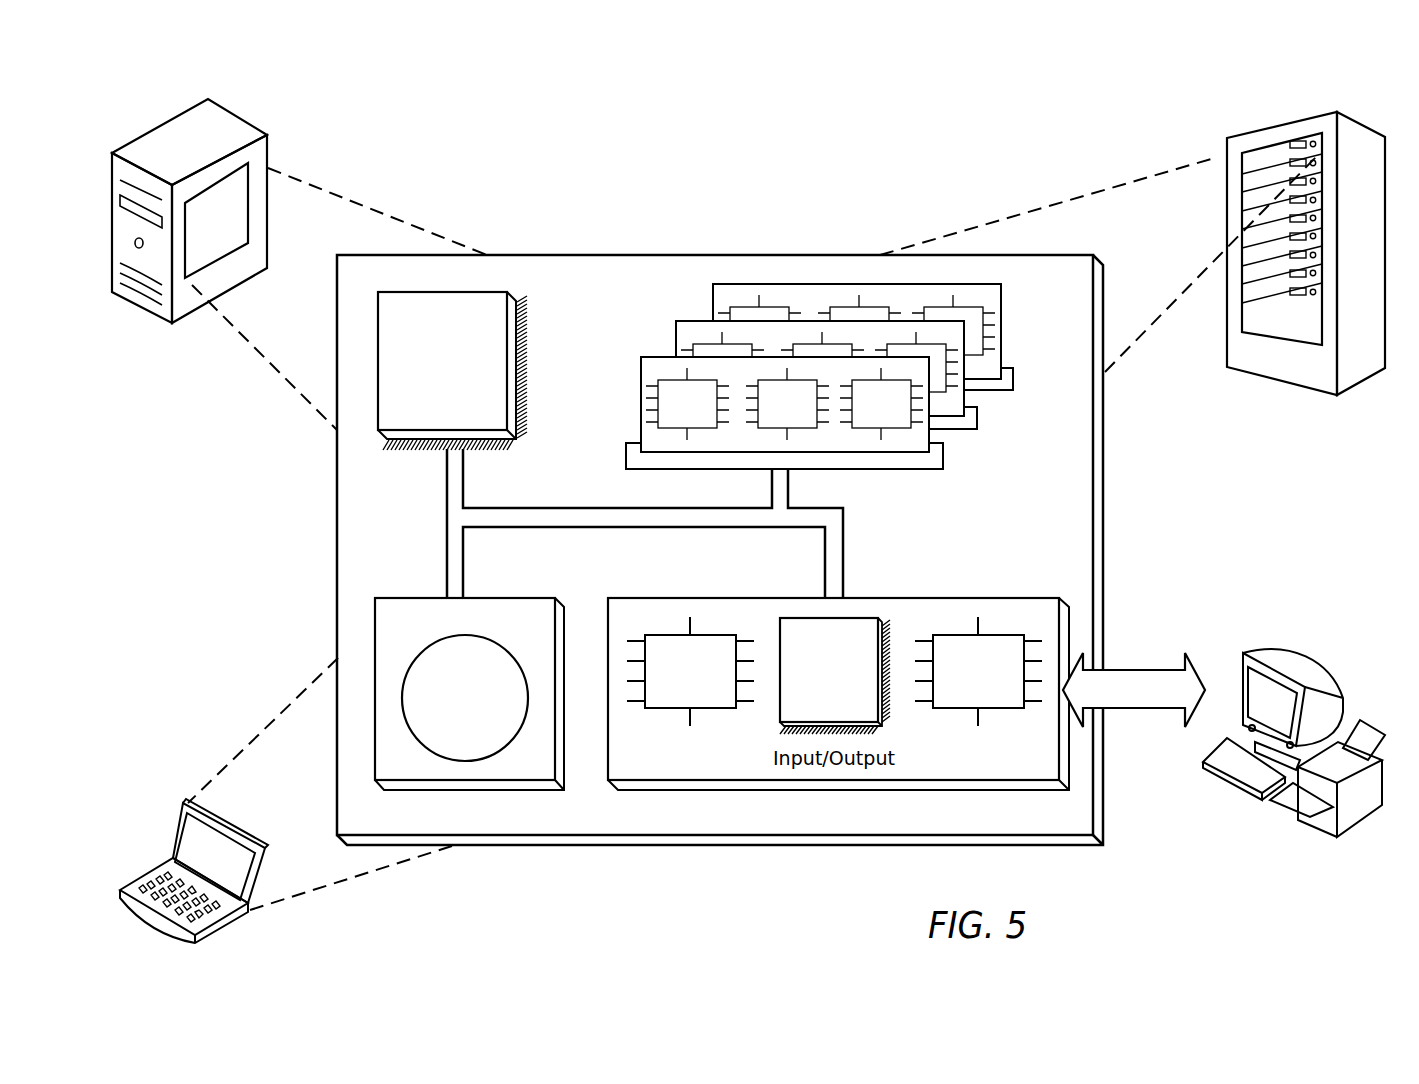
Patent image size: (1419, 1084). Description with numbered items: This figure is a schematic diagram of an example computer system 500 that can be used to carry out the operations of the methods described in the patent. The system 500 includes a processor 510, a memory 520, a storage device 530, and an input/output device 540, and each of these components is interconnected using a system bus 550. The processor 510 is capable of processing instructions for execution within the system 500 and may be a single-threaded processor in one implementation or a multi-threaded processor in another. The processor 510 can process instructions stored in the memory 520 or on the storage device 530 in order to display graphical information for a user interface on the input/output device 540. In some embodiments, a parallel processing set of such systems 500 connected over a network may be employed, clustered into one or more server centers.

The computer system 500 is at (268, 80).
The processor 510 is at (452, 371).
The memory 520 is at (1007, 433).
The storage device 530 is at (469, 694).
The input/output device 540 is at (1240, 655).
The system bus 550 is at (643, 528).